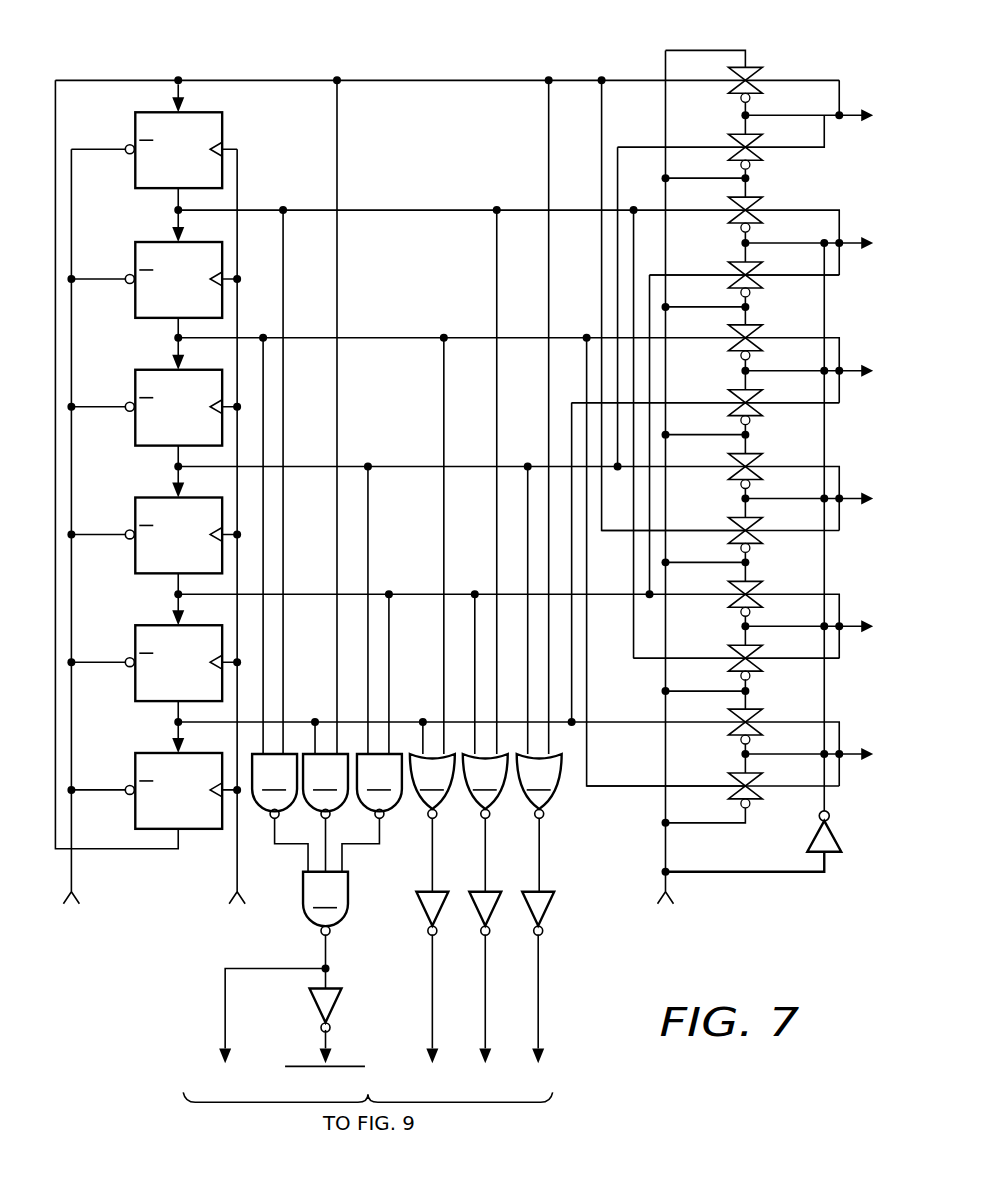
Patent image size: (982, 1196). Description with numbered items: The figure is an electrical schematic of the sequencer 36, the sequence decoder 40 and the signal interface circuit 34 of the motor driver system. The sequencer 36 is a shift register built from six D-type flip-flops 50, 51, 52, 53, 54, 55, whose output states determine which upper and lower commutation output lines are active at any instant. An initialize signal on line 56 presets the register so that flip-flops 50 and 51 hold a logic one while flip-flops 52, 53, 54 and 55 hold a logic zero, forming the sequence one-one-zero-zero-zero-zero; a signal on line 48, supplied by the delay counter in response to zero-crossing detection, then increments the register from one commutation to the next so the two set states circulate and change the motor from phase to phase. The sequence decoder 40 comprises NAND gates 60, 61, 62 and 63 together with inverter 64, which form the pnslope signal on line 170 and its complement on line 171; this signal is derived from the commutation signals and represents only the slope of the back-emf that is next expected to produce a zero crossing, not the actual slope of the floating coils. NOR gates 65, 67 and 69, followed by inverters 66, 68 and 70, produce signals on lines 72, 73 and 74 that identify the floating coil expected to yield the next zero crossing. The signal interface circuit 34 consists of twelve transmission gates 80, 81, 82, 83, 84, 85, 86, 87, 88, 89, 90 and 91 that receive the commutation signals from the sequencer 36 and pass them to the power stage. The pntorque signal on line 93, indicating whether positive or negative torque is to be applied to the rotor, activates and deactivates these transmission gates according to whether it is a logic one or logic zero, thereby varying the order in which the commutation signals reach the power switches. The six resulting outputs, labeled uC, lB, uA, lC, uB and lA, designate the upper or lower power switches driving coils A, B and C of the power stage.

The signal interface circuit 34 is at (632, 50).
The sequencer 36 is at (128, 50).
The sequence decoder 40 is at (186, 970).
The line 48 is at (237, 880).
The D-type flip-flop 50 is at (135, 120).
The D-type flip-flop 51 is at (135, 250).
The D-type flip-flop 52 is at (135, 378).
The D-type flip-flop 53 is at (135, 506).
The D-type flip-flop 54 is at (135, 634).
The D-type flip-flop 55 is at (135, 762).
The line 56 is at (71, 880).
The NAND gate 60 is at (280, 813).
The NAND gate 61 is at (325, 813).
The NAND gate 62 is at (372, 813).
The NAND gate 63 is at (325, 930).
The inverter 64 is at (334, 1010).
The NOR gate 65 is at (432, 823).
The inverter 66 is at (420, 915).
The NOR gate 67 is at (485, 823).
The inverter 68 is at (490, 893).
The NOR gate 69 is at (539, 823).
The inverter 70 is at (550, 915).
The line 72 is at (432, 983).
The line 73 is at (486, 985).
The line 74 is at (540, 983).
The transmission gate 80 is at (763, 70).
The transmission gate 81 is at (729, 136).
The transmission gate 82 is at (763, 200).
The transmission gate 83 is at (729, 264).
The transmission gate 84 is at (763, 328).
The transmission gate 85 is at (729, 392).
The transmission gate 86 is at (763, 457).
The transmission gate 87 is at (729, 520).
The transmission gate 88 is at (763, 585).
The transmission gate 89 is at (729, 648).
The transmission gate 90 is at (763, 713).
The transmission gate 91 is at (729, 776).
The line 93 is at (666, 853).
The line 170 is at (225, 1018).
The line 171 is at (322, 1035).